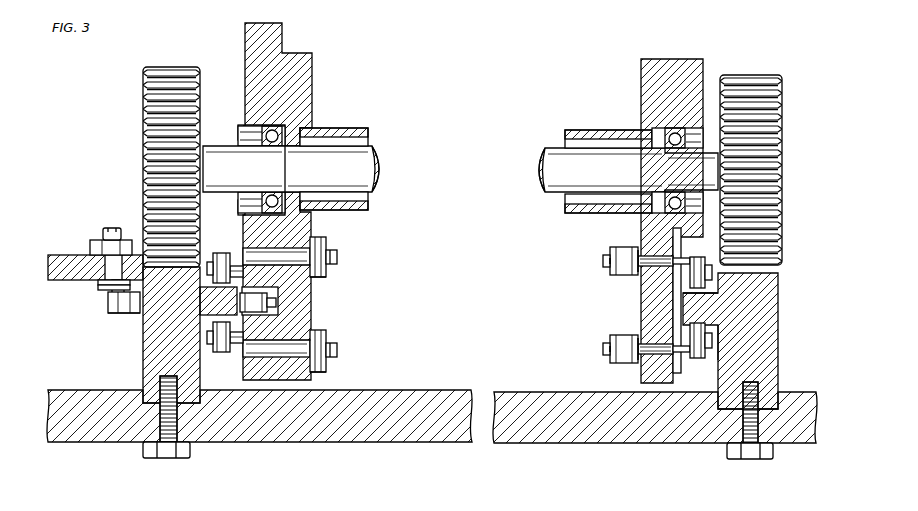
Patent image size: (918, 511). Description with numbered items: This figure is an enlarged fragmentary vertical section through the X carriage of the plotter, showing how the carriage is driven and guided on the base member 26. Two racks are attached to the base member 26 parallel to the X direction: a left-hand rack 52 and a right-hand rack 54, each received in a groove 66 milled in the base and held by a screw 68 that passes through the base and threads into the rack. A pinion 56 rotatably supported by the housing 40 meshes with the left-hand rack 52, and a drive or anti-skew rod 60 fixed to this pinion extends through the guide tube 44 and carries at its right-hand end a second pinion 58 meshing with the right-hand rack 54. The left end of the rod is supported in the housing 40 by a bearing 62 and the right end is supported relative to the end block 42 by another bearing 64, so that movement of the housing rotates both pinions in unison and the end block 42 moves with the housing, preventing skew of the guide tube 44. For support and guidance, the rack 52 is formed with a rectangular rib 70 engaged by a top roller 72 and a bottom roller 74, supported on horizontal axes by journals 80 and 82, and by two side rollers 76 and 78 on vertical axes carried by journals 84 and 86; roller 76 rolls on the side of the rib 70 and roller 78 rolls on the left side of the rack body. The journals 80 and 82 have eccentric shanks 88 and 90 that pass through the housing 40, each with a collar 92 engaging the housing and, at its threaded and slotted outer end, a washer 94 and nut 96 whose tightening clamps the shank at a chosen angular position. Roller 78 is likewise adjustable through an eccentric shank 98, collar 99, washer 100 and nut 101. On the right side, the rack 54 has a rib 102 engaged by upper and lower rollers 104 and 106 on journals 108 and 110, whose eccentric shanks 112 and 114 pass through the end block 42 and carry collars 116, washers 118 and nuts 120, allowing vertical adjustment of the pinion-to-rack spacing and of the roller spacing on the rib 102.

The base member 26 is at (404, 392).
The housing 40 is at (288, 53).
The end block 42 is at (660, 59).
The guide tube 44 is at (350, 128).
The left-hand rack 52 is at (176, 329).
The right-hand rack 54 is at (760, 339).
The pinion 56 is at (145, 70).
The pinion 58 is at (750, 75).
The drive or anti-skew rod 60 is at (380, 150).
The bearing 62 is at (298, 102).
The bearing 64 is at (676, 130).
The groove 66 is at (182, 404).
The screw 68 is at (192, 453).
The rib 70 is at (231, 356).
The top roller 72 is at (223, 252).
The bottom roller 74 is at (220, 352).
The side roller 76 is at (277, 298).
The side roller 78 is at (108, 303).
The journal 80 is at (205, 292).
The journal 82 is at (198, 338).
The journal 84 is at (262, 327).
The journal 86 is at (125, 314).
The shank 88 is at (335, 250).
The shank 90 is at (348, 336).
The collar 92 is at (246, 244).
The washer 94 is at (318, 238).
The nut 96 is at (320, 270).
The eccentric shank 98 is at (100, 282).
The collar 99 is at (102, 288).
The washer 100 is at (92, 253).
The nut 101 is at (110, 230).
The rib 102 is at (682, 297).
The upper roller 104 is at (697, 292).
The lower roller 106 is at (722, 350).
The journal 108 is at (694, 258).
The journal 110 is at (697, 358).
The shank 112 is at (612, 252).
The shank 114 is at (612, 342).
The collar 116 is at (676, 245).
The washer 118 is at (640, 235).
The nut 120 is at (636, 278).